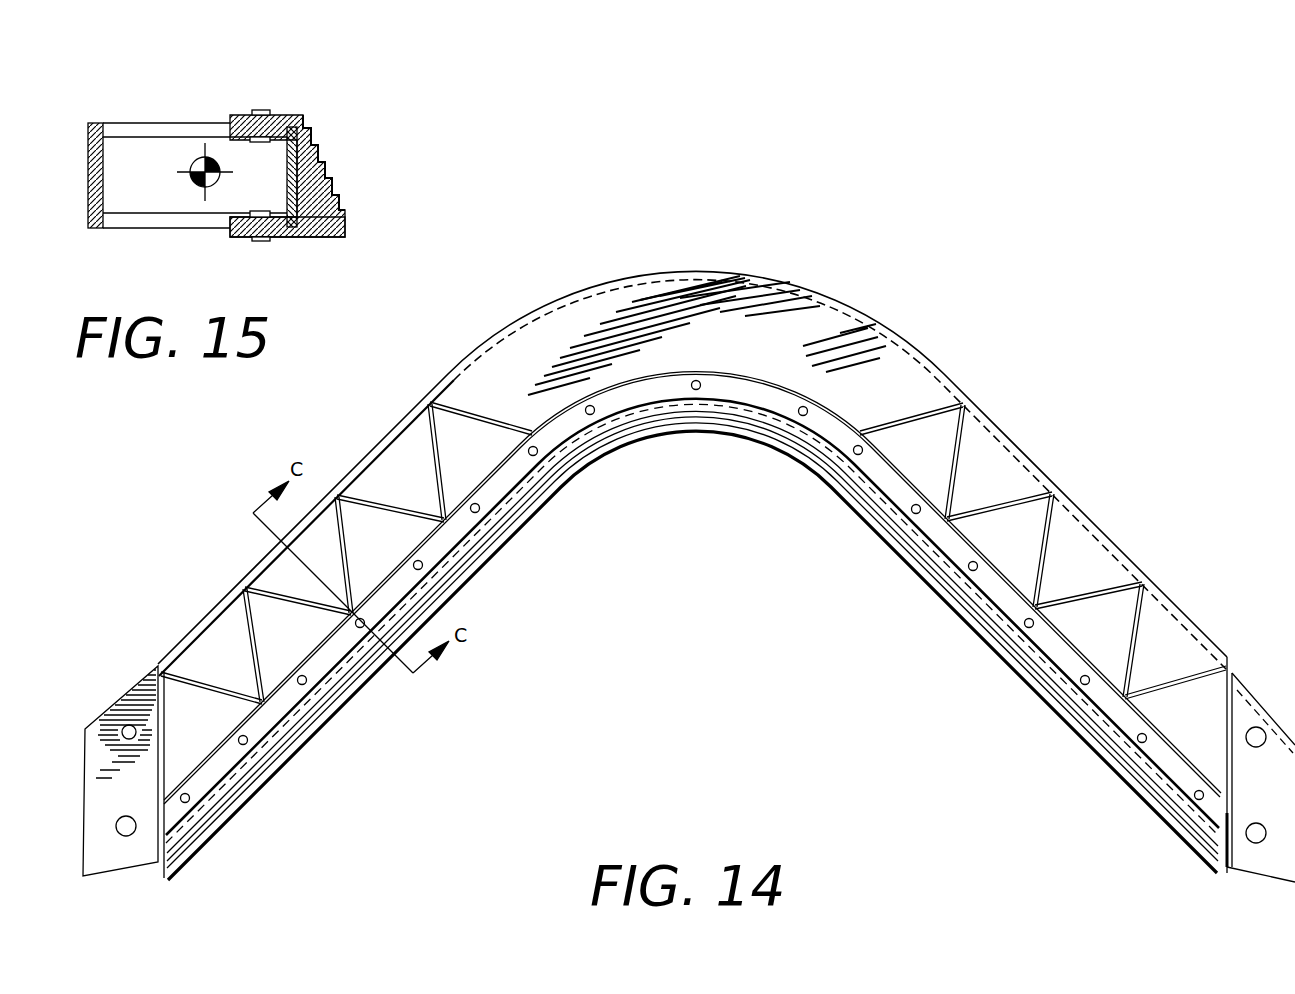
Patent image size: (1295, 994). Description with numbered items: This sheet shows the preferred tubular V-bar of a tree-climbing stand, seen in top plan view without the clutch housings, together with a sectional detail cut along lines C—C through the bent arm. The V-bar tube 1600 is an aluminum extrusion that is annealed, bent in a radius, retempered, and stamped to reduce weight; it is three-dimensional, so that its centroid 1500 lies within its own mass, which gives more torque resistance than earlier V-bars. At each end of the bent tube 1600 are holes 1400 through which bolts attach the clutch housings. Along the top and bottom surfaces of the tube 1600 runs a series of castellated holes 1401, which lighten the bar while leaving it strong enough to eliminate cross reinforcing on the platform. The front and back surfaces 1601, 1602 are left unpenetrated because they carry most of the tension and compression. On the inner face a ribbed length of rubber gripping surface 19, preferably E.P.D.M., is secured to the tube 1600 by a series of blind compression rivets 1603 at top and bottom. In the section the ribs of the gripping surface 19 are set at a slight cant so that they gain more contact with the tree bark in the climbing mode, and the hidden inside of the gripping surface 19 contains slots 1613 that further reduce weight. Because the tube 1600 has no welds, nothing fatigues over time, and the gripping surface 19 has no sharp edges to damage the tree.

In FIG. 15, the gripping surface 19 is at (336, 190).
In FIG. 14, the gripping surface 19 is at (356, 657).
In FIG. 14, the holes 1400 is at (130, 726).
In FIG. 14, the castellated holes 1401 is at (218, 636).
In FIG. 15, the centroid 1500 is at (213, 162).
In FIG. 15, the V-bar tube 1600 is at (180, 130).
In FIG. 14, the V-bar tube 1600 is at (568, 312).
In FIG. 15, the front surface 1601 is at (346, 226).
In FIG. 15, the back surface 1602 is at (92, 128).
In FIG. 15, the blind compression rivets 1603 is at (268, 112).
In FIG. 14, the blind compression rivets 1603 is at (421, 568).
In FIG. 15, the slots 1613 is at (340, 187).